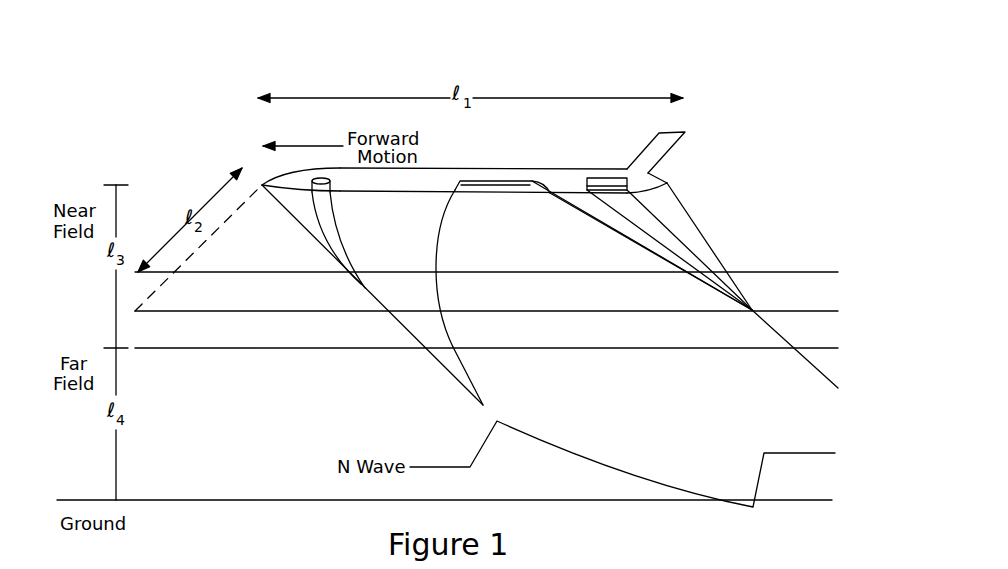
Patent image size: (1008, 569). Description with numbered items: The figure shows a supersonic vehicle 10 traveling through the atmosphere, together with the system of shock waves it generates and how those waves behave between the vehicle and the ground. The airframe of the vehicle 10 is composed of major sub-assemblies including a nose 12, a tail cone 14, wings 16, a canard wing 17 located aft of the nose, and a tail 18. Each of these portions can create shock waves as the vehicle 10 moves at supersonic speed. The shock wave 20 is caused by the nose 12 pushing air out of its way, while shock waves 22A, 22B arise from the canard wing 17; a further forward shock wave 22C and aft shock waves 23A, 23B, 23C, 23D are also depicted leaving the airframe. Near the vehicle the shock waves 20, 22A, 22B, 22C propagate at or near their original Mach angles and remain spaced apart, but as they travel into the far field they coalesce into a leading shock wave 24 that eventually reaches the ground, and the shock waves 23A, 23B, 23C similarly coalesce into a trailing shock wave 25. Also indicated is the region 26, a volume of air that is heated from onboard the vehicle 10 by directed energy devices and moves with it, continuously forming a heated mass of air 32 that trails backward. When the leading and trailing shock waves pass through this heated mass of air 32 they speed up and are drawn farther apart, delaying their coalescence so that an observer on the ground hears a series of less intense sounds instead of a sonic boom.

The vehicle 10 is at (618, 80).
The nose 12 is at (262, 185).
The tail cone 14 is at (676, 181).
The wings 16 is at (478, 178).
The canard wing 17 is at (312, 177).
The tail 18 is at (670, 132).
The shock wave 20 is at (338, 262).
The shock wave 22A is at (333, 209).
The shock wave 22B is at (335, 247).
The shock wave 22C is at (447, 218).
The shock wave 23A is at (608, 207).
The shock wave 23B is at (658, 220).
The shock wave 23C is at (707, 242).
The aft shock wave 23D is at (544, 190).
The leading shock wave 24 is at (412, 343).
The trailing shock wave 25 is at (815, 370).
The region 26 is at (134, 316).
The heated mass of air 32 is at (165, 350).